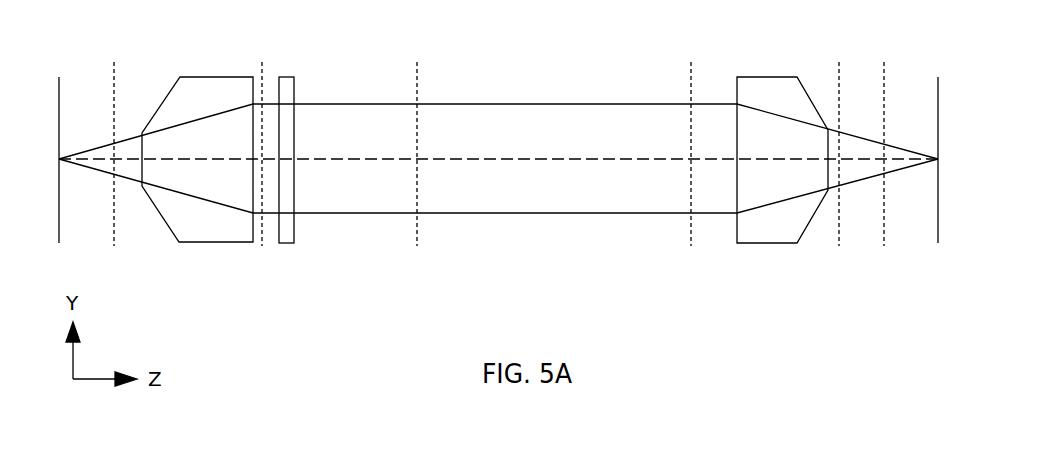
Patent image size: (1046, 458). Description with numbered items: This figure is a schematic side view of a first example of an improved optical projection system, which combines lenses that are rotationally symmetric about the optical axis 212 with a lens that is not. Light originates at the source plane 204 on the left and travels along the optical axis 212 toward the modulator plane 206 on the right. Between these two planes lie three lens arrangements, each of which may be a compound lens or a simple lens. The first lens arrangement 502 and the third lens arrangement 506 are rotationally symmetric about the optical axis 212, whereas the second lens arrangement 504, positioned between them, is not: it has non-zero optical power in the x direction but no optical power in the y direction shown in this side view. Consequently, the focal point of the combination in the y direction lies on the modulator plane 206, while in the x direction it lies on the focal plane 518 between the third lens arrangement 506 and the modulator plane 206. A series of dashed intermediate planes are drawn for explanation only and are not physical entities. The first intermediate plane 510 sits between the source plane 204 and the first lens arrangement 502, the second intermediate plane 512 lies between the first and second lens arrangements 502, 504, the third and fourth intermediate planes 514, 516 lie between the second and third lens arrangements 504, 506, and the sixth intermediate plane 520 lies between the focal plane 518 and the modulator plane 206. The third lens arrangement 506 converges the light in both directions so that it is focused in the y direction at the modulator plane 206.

The source plane 204 is at (67, 105).
The modulator plane 206 is at (930, 105).
The optical axis 212 is at (323, 158).
The first lens arrangement 502 is at (200, 77).
The second lens arrangement 504 is at (288, 77).
The third lens arrangement 506 is at (755, 75).
The first intermediate plane 510 is at (118, 243).
The second intermediate plane 512 is at (265, 243).
The third intermediate plane 514 is at (420, 243).
The fourth intermediate plane 516 is at (694, 243).
The focal plane in the x direction 518 is at (842, 243).
The sixth intermediate plane 520 is at (887, 243).